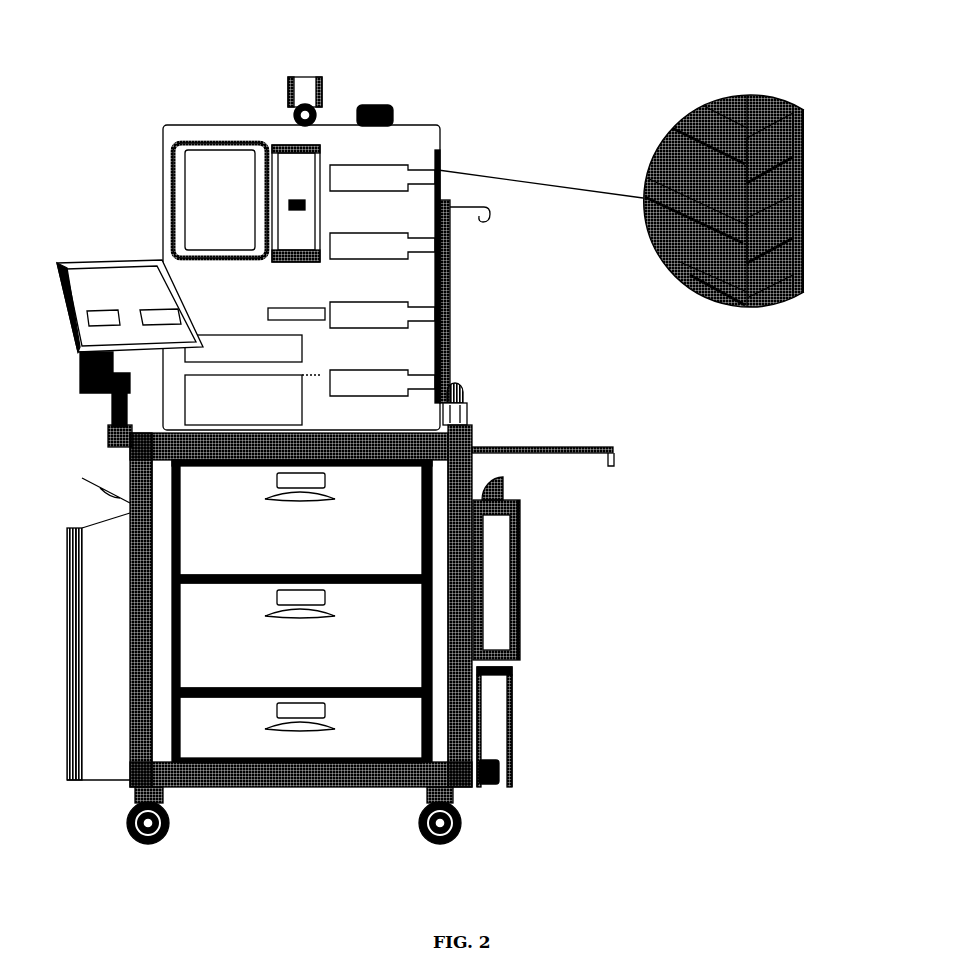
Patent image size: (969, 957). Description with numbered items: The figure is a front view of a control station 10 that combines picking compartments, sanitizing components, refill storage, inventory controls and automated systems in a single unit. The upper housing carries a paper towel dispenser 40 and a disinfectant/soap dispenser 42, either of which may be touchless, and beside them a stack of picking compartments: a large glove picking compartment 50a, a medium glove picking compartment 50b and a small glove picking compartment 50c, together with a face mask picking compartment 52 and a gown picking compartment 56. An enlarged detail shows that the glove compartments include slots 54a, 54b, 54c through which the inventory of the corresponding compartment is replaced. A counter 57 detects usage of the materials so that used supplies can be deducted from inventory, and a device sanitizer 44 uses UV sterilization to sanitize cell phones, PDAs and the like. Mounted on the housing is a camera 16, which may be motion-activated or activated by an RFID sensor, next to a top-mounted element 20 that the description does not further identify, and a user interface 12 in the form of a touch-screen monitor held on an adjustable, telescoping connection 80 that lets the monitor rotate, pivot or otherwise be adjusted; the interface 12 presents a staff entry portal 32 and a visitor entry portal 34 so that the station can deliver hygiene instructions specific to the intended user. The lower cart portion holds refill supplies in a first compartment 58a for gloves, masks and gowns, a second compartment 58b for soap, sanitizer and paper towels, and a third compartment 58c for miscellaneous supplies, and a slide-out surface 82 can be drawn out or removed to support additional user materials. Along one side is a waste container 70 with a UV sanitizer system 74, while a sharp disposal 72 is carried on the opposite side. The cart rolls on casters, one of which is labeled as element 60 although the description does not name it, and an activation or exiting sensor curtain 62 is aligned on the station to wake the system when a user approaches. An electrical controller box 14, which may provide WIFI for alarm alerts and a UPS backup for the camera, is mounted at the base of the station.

The control station 10 is at (78, 103).
The user interface 12 is at (64, 300).
The electrical controller box 14 is at (505, 760).
The camera 16 is at (323, 85).
The light 20 is at (393, 107).
The staff entry portal 32 is at (107, 312).
The visitor entry portal 34 is at (160, 312).
The paper towel dispenser 40 is at (200, 160).
The disinfectant/soap dispenser 42 is at (290, 158).
The device sanitizer 44 is at (110, 445).
The large glove picking compartment 50a is at (392, 170).
The medium glove picking compartment 50b is at (402, 243).
The small glove picking compartment 50c is at (402, 318).
The face mask picking compartment 52 is at (412, 383).
The slot 54a is at (806, 142).
The slot 54b is at (806, 218).
The slot 54c is at (806, 282).
The gown picking compartment 56 is at (210, 355).
The counter 57 is at (302, 313).
The first compartment 58a is at (398, 510).
The second compartment 58b is at (403, 597).
The third compartment 58c is at (398, 718).
The left caster 60 is at (163, 720).
The activation sensor curtain 62 is at (450, 705).
The waste container 70 is at (104, 758).
The sharp disposal 72 is at (520, 502).
The UV sanitizer system 74 is at (96, 565).
The adjustable connection 80 is at (82, 385).
The slide-out surface 82 is at (566, 447).